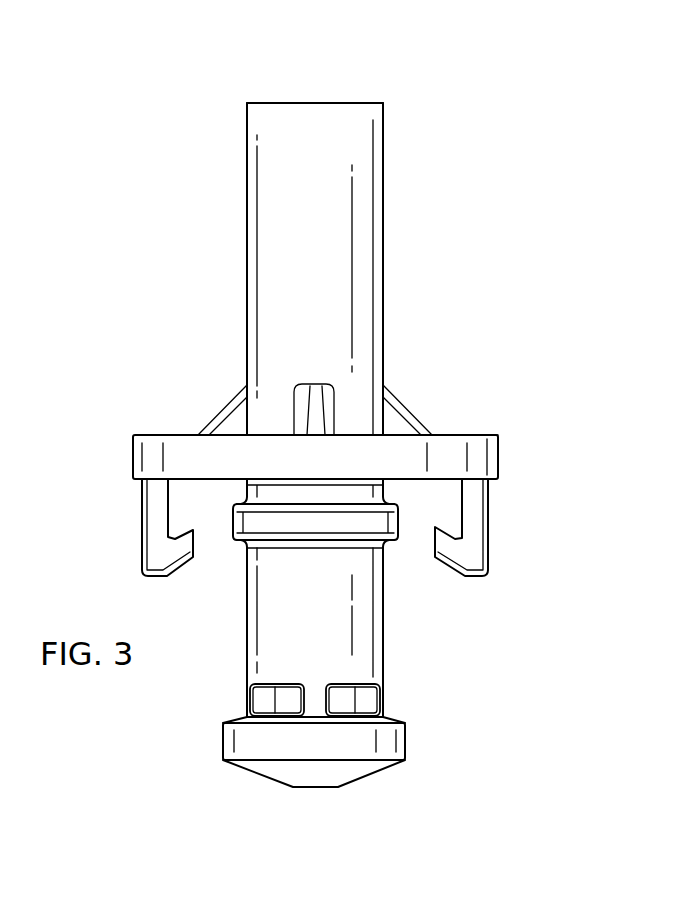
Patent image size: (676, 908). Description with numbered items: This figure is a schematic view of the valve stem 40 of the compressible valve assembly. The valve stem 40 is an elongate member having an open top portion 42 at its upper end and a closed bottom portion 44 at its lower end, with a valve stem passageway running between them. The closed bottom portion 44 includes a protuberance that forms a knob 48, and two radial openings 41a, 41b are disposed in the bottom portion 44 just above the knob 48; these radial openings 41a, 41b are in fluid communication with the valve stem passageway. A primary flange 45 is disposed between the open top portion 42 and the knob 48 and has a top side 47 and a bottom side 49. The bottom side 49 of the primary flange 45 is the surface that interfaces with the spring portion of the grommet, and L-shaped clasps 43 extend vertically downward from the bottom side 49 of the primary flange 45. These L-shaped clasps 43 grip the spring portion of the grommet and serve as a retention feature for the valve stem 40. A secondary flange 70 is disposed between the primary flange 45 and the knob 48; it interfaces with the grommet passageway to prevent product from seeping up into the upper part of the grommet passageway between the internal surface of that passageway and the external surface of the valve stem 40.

The valve stem 40 is at (247, 268).
The open top portion 42 is at (292, 103).
The L-shaped clasps 43 is at (142, 523).
The closed bottom portion 44 is at (383, 770).
The primary flange 45 is at (133, 458).
The top side 47 is at (447, 435).
The knob 48 is at (223, 742).
The bottom side 49 is at (442, 481).
The secondary flange 70 is at (308, 523).
The radial opening 41a is at (350, 700).
The radial opening 41b is at (280, 700).